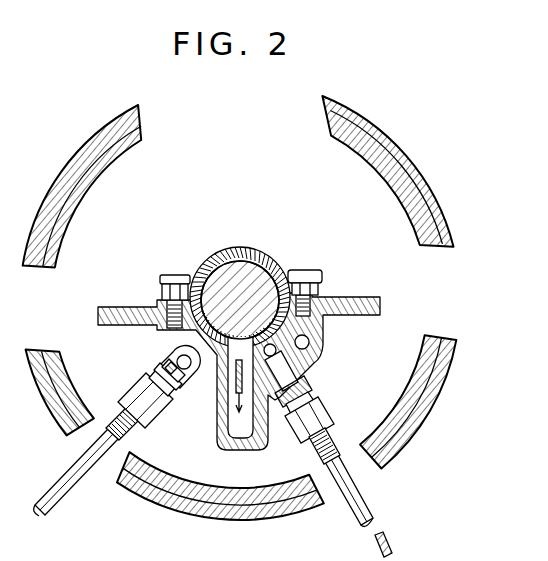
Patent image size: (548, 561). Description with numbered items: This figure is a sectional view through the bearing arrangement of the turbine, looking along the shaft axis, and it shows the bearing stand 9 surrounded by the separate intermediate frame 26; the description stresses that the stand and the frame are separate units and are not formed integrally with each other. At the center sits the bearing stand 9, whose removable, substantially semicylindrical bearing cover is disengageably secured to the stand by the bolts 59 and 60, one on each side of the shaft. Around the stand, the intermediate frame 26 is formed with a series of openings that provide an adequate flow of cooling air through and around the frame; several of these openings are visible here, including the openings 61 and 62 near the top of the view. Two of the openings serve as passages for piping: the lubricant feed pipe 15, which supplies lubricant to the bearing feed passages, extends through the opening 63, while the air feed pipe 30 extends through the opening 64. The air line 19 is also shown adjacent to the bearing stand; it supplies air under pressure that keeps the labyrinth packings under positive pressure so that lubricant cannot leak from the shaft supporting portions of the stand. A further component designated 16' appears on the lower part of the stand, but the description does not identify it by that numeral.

The bearing stand 9 is at (252, 248).
The lubricant feed pipe 15 is at (373, 510).
The slot 16' is at (210, 396).
The air line 19 is at (310, 350).
The intermediate frame 26 is at (98, 175).
The air feed pipe 30 is at (62, 482).
The bolt 59 is at (303, 270).
The bolt 60 is at (173, 273).
The opening 61 is at (270, 107).
The opening 62 is at (440, 273).
The opening 63 is at (348, 492).
The opening 64 is at (110, 470).